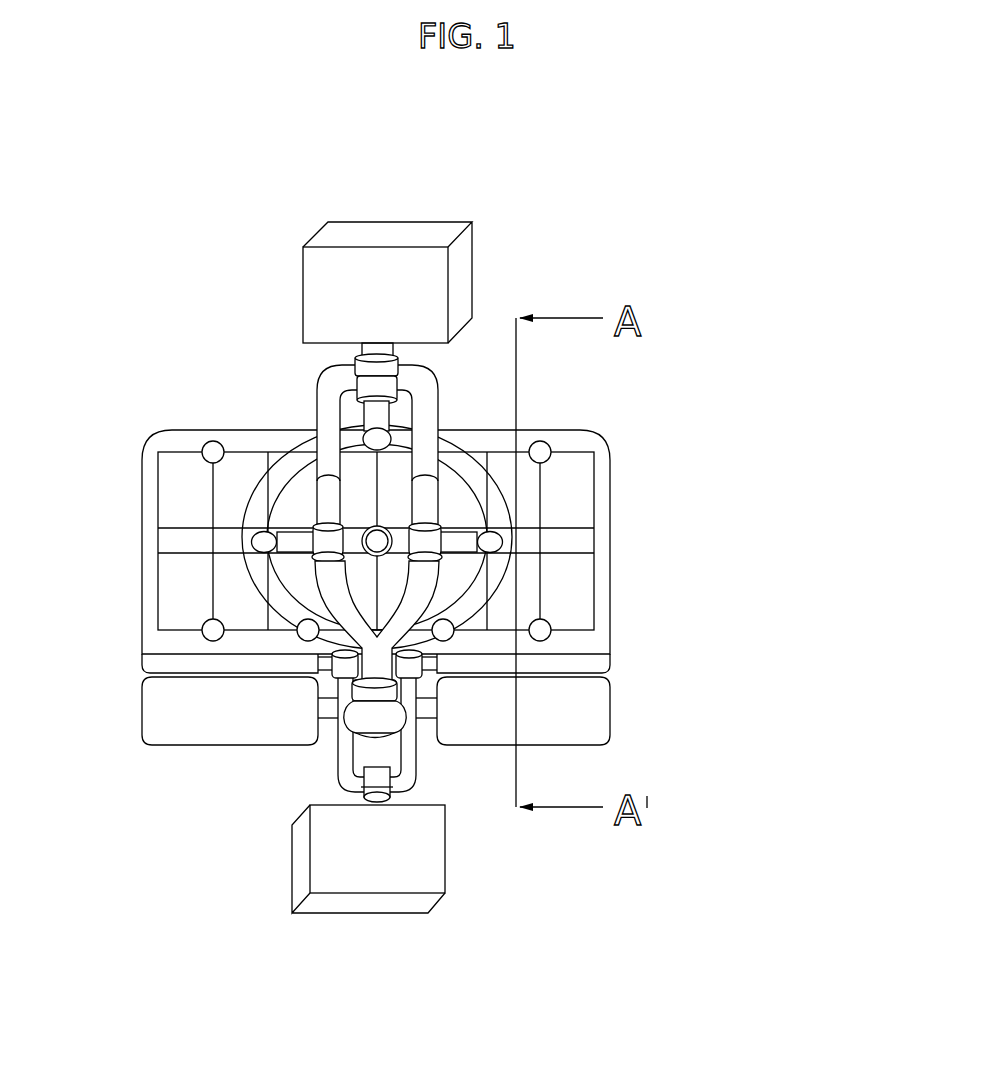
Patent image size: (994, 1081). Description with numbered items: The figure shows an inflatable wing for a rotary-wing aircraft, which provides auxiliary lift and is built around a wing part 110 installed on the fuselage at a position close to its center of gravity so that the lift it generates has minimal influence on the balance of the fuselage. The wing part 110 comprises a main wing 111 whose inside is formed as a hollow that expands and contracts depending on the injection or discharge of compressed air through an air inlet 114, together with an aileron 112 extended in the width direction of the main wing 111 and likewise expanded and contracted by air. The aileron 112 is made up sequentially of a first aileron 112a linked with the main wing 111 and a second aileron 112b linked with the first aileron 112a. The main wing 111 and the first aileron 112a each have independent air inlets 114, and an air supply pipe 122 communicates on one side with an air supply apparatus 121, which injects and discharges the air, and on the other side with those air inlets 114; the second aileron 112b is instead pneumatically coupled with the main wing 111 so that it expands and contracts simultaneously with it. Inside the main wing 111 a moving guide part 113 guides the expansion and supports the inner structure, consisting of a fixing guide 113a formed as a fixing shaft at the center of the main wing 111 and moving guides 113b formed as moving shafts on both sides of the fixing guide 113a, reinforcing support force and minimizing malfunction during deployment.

The wing part 110 is at (700, 370).
The main wing 111 is at (585, 425).
The aileron 112 is at (785, 700).
The first aileron 112a is at (623, 662).
The second aileron 112b is at (623, 713).
The moving guide part 113 is at (195, 343).
The fixing guide 113a is at (278, 452).
The moving guide 113b is at (190, 451).
The air inlet 114 is at (464, 536).
The air supply apparatus 121 is at (358, 206).
The air supply pipe 122 is at (390, 742).